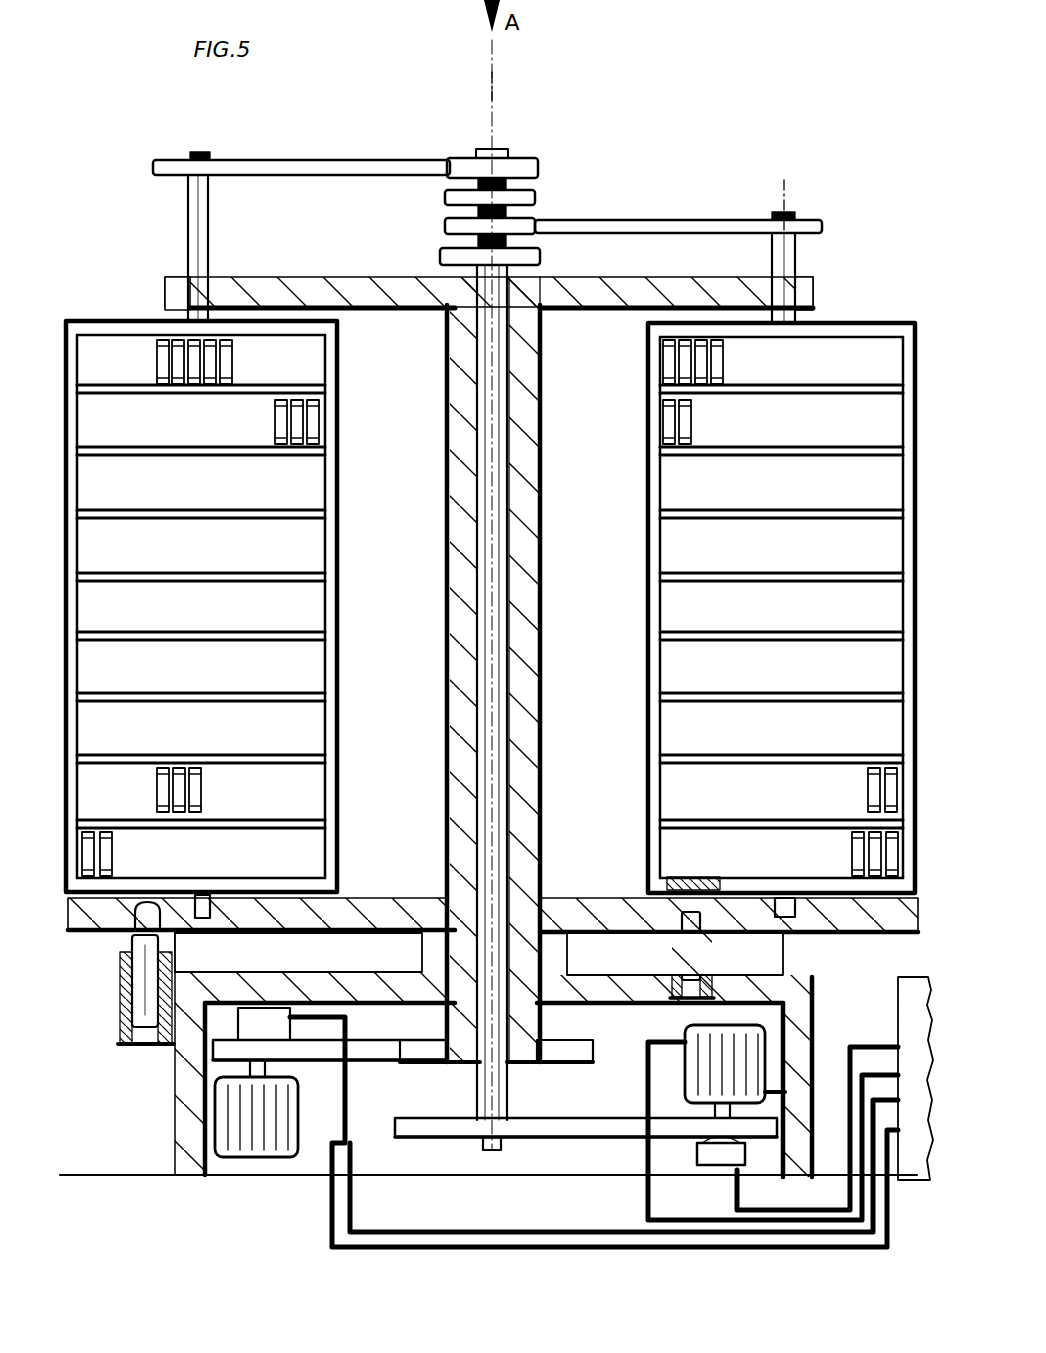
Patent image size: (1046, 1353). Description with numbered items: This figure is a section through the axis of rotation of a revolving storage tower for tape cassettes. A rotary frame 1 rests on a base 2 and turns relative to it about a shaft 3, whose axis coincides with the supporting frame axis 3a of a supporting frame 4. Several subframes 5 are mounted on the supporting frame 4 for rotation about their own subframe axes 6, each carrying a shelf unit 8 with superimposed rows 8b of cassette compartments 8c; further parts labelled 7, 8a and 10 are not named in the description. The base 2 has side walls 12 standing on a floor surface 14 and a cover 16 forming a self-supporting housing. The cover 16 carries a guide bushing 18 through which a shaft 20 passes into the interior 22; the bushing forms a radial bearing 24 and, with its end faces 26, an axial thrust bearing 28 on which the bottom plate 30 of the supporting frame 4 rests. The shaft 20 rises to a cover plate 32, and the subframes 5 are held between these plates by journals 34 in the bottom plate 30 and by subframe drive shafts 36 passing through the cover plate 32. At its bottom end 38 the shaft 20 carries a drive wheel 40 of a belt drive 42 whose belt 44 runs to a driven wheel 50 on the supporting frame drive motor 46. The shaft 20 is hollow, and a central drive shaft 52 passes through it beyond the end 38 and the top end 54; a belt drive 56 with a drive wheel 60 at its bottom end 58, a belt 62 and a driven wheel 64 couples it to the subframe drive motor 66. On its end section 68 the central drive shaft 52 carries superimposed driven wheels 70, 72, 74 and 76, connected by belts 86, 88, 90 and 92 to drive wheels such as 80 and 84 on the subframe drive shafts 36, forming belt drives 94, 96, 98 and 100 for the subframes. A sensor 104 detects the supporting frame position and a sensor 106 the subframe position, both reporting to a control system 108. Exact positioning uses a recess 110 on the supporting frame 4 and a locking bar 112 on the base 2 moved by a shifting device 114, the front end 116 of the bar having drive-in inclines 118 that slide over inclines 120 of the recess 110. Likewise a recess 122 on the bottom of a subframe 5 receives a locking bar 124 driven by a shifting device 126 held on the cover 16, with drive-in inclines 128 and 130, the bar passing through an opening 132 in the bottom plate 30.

The rotary frame 1 is at (855, 298).
The base 2 is at (152, 1114).
The shaft 3 is at (545, 400).
The supporting frame axis 3a is at (492, 74).
The supporting frame 4 is at (572, 588).
The subframe 5 is at (233, 606).
The subframe axis of rotation 6 is at (788, 195).
The stored articles 7 is at (330, 425).
The shelf unit 8 is at (302, 480).
The shelf 8a is at (300, 515).
The rows 8b is at (300, 720).
The cassette compartments 8c is at (665, 608).
The right storage cabinet 10 is at (751, 608).
The side walls 12 is at (190, 1138).
The floor surface 14 is at (220, 1176).
The cover 16 is at (395, 985).
The guide bushing 18 is at (540, 930).
The shaft 20 is at (522, 470).
The interior 22 is at (355, 1176).
The radial bearing 24 is at (448, 935).
The end faces 26 is at (400, 935).
The axial thrust bearing 28 is at (552, 935).
The bottom plate 30 is at (900, 930).
The cover plate 32 is at (803, 290).
The journals 34 is at (812, 935).
The subframe drive shafts 36 is at (190, 250).
The bottom end 38 is at (470, 1064).
The drive wheel 40 is at (552, 1064).
The belt drive 42 is at (372, 1082).
The belt 44 is at (336, 1048).
The supporting frame drive motor 46 is at (256, 1130).
The driven wheel 50 is at (205, 1075).
The central drive shaft 52 is at (500, 535).
The top end 54 is at (537, 290).
The belt drive 56 is at (580, 1162).
The bottom end 58 is at (490, 1152).
The drive wheel 60 is at (420, 1140).
The belt 62 is at (635, 1138).
The driven wheel 64 is at (765, 1152).
The subframe drive motor 66 is at (688, 1030).
The end section 68 is at (500, 150).
The driven wheel 70 is at (440, 266).
The driven wheel 72 is at (535, 240).
The driven wheel 74 is at (537, 197).
The driven wheel 76 is at (530, 165).
The drive wheel 80 is at (800, 222).
The drive wheel 84 is at (185, 160).
The belt 86 is at (447, 255).
The belt 88 is at (445, 225).
The belt 90 is at (560, 222).
The belt 92 is at (536, 178).
The belt drive 94 is at (552, 262).
The belt drive 96 is at (690, 212).
The belt drive 98 is at (432, 180).
The belt drive 100 is at (316, 140).
The sensor 104 is at (270, 1012).
The sensor 106 is at (715, 1165).
The control system 108 is at (882, 985).
The recess 110 is at (178, 898).
The locking bar 112 is at (140, 992).
The shifting device 114 is at (130, 1045).
The front end 116 is at (130, 930).
The drive-in inclines 118 is at (160, 945).
The drive-in inclines 120 is at (150, 898).
The recess 122 is at (712, 877).
The locking bar 124 is at (688, 958).
The shifting device 126 is at (712, 972).
The drive-in inclines 128 is at (688, 935).
The drive-in inclines 130 is at (690, 877).
The opening 132 is at (722, 905).